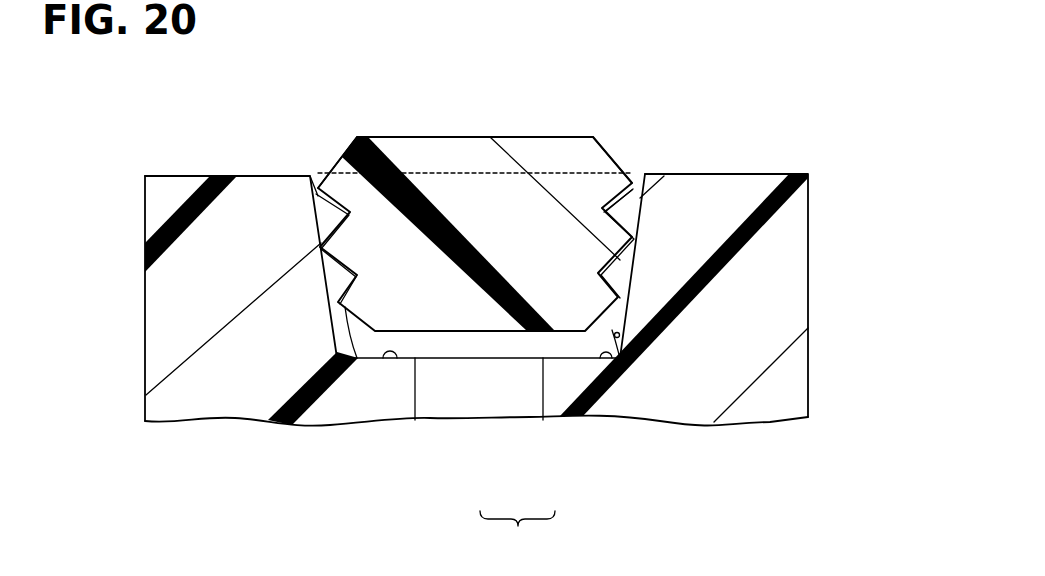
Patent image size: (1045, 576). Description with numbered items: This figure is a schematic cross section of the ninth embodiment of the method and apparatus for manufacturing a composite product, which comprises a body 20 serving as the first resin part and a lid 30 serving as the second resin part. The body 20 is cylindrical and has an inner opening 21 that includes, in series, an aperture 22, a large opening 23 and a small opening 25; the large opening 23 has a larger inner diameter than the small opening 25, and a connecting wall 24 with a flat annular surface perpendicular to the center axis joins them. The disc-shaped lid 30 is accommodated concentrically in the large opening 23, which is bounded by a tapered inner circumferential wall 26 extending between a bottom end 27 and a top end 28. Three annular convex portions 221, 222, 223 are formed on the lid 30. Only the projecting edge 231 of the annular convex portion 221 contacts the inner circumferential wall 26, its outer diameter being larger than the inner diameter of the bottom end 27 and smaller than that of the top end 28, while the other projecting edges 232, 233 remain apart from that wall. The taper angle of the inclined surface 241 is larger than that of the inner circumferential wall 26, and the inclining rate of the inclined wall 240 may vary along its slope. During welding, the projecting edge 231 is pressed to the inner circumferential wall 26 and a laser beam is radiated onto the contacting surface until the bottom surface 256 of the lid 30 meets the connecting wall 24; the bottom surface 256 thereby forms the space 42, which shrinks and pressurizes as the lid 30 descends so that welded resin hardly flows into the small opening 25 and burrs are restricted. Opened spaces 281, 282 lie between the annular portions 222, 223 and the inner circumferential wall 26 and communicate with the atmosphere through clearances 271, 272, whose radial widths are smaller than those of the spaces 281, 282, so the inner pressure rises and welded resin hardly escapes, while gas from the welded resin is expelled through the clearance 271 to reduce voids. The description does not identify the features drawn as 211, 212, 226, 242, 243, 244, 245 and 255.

The body 20 is at (776, 168).
The inner opening 21 is at (517, 532).
The aperture 22 is at (473, 173).
The large opening 23 is at (493, 350).
The connecting wall 24 is at (389, 360).
The small opening 25 is at (515, 402).
The inner circumferential wall 26 is at (615, 333).
The bottom end 27 is at (603, 352).
The top end 28 is at (640, 200).
The lid 30 is at (575, 131).
The space 42 is at (398, 345).
The seal ring 211 is at (372, 158).
The bonding layer 212 is at (340, 273).
The annular convex portion 221 is at (325, 250).
The annular convex portion 222 is at (333, 208).
The annular convex portion 223 is at (361, 358).
The engaging portion 226 is at (343, 165).
The projecting edge 231 is at (637, 243).
The projecting edge 232 is at (638, 178).
The projecting edge 233 is at (618, 312).
The inclined wall 240 is at (640, 243).
The inclined surface 241 is at (620, 283).
The layer 242 is at (637, 200).
The layer 243 is at (598, 352).
The layer 244 is at (620, 288).
The projection 245 is at (633, 178).
The top surface 255 is at (480, 135).
The bottom surface 256 is at (400, 342).
The clearance 271 is at (312, 200).
The clearance 272 is at (336, 298).
The opened space 281 is at (330, 212).
The opened space 282 is at (335, 277).